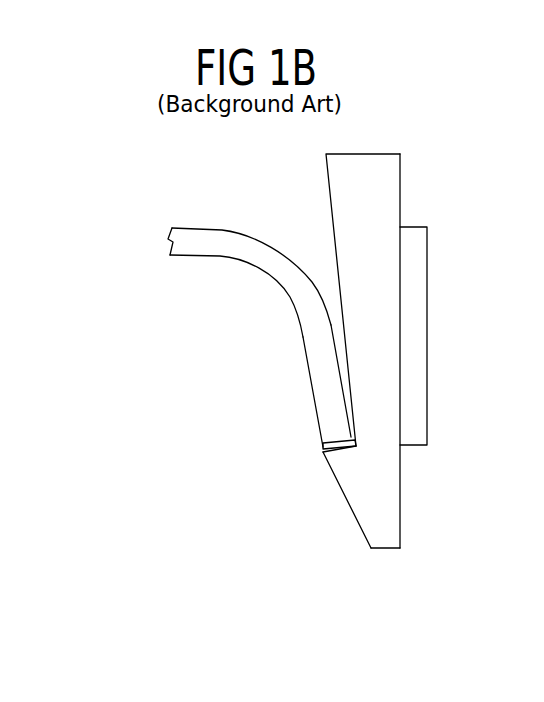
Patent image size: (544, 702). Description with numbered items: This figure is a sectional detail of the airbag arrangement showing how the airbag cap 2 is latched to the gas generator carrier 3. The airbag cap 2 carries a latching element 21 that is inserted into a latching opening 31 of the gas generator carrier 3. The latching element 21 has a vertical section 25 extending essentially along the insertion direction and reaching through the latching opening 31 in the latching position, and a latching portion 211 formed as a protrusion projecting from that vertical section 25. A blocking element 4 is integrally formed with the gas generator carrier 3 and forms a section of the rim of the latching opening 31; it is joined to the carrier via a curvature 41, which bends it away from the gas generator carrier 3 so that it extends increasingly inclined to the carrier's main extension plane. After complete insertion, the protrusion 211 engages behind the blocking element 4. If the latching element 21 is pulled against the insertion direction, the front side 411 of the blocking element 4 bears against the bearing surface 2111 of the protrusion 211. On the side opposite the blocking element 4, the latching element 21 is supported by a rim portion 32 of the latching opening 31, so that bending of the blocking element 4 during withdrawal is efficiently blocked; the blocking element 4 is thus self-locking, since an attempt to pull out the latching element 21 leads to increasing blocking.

The airbag cap 2 is at (378, 193).
The latching element 21 is at (345, 497).
The latching portion 211 is at (340, 473).
The bearing surface 2111 is at (337, 450).
The vertical section 25 is at (382, 370).
The rim portion 32 is at (418, 293).
The gas generator carrier 3 is at (249, 320).
The latching opening 31 is at (345, 407).
The blocking element 4 is at (318, 352).
The curvature 41 is at (275, 258).
The front side 411 is at (330, 446).